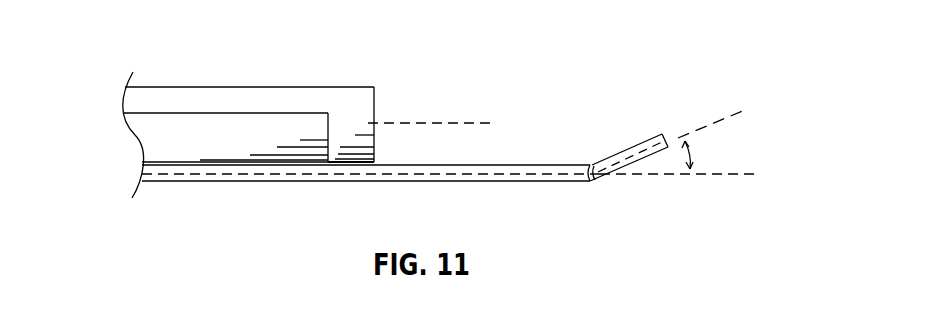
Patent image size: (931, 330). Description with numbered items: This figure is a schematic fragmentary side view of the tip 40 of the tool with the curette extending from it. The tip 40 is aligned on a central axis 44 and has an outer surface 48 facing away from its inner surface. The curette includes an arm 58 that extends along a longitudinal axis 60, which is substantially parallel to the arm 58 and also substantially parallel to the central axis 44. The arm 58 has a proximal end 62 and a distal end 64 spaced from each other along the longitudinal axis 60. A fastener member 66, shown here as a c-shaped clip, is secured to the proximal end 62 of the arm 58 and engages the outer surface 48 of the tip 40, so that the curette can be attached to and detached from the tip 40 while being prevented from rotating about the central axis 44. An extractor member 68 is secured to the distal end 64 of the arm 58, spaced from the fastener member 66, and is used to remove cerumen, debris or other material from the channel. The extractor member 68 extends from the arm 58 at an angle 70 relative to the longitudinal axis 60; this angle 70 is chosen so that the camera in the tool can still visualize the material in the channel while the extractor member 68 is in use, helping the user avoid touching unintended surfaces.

The tip 40 is at (340, 98).
The central axis 44 is at (458, 115).
The outer surface 48 is at (162, 98).
The arm 58 is at (396, 183).
The longitudinal axis 60 is at (738, 175).
The proximal end 62 is at (233, 183).
The distal end 64 is at (570, 182).
The fastener member 66 is at (150, 138).
The extractor member 68 is at (625, 150).
The angle 70 is at (695, 155).